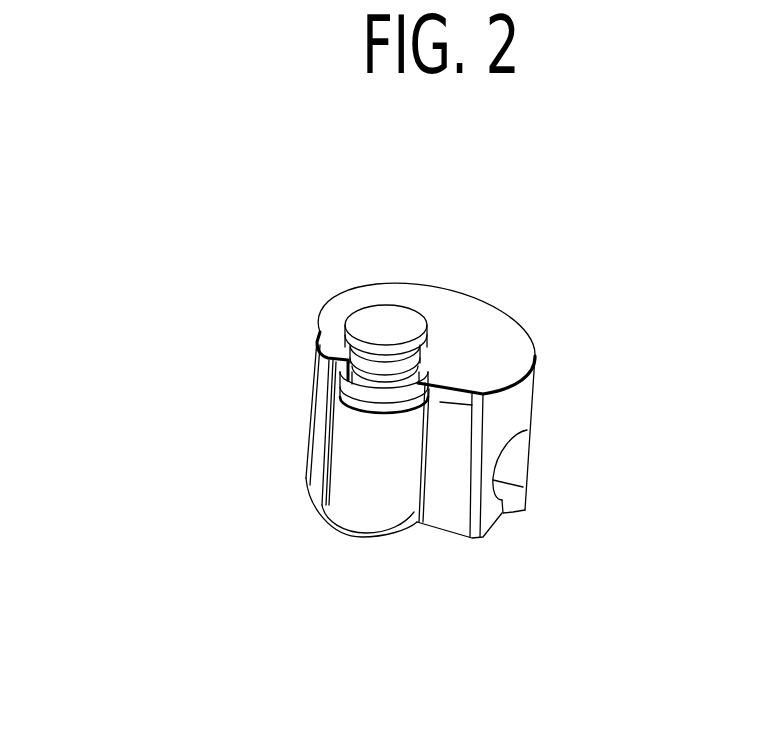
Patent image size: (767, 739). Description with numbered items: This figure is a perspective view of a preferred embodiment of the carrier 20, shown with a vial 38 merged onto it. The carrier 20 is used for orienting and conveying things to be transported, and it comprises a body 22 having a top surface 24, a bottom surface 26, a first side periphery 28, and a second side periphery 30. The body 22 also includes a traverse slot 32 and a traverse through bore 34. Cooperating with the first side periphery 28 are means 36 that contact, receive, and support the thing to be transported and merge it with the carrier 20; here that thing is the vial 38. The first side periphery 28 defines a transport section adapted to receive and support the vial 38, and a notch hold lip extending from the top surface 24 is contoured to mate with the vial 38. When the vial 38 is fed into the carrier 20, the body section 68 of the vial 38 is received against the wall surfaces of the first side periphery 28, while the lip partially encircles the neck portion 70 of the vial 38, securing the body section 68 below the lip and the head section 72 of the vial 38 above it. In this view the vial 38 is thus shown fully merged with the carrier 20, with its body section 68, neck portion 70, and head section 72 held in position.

The carrier 20 is at (552, 357).
The body 22 is at (512, 400).
The top surface 24 is at (489, 345).
The bottom surface 26 is at (492, 533).
The first side periphery 28 is at (447, 540).
The second side periphery 30 is at (502, 300).
The traverse slot 32 is at (513, 512).
The traverse through bore 34 is at (507, 466).
The means cooperative with the first side periphery 36 is at (343, 370).
The vial 38 is at (398, 520).
The body section 68 is at (372, 480).
The neck portion 70 is at (378, 390).
The head section 72 is at (346, 329).